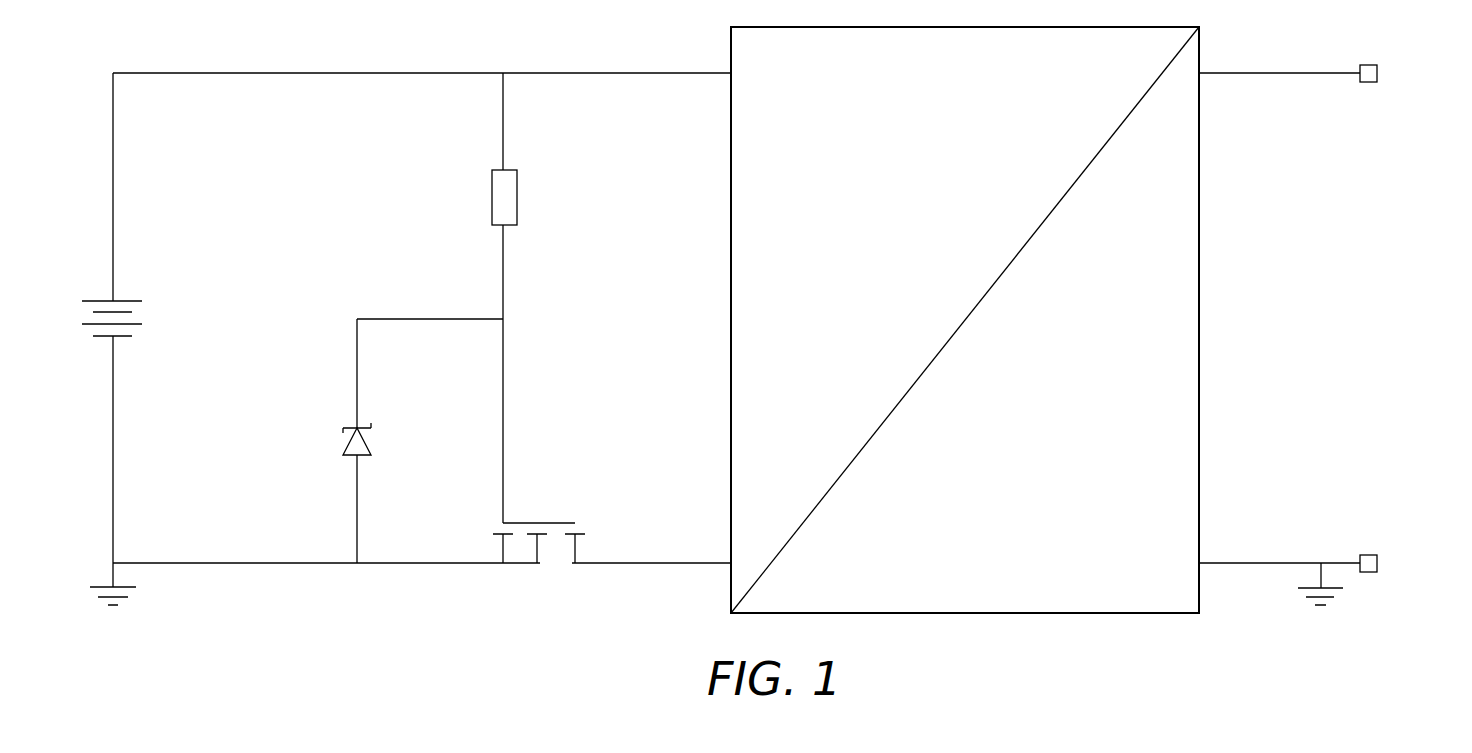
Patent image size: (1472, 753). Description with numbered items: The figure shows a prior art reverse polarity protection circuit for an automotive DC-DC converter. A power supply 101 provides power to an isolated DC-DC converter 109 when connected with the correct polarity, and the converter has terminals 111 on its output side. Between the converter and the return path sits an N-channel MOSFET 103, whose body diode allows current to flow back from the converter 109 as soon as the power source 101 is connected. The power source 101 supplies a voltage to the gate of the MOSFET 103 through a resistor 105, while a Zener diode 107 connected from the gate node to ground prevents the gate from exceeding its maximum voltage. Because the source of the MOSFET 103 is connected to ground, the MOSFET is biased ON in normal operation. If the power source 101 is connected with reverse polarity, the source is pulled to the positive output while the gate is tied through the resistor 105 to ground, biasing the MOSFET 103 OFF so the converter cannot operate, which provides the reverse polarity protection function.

The power supply 101 is at (142, 312).
The N-channel MOSFET 103 is at (555, 566).
The resistor 105 is at (517, 195).
The Zener diode 107 is at (371, 440).
The isolated DC-DC converter 109 is at (987, 219).
The terminals 111 is at (1377, 73).